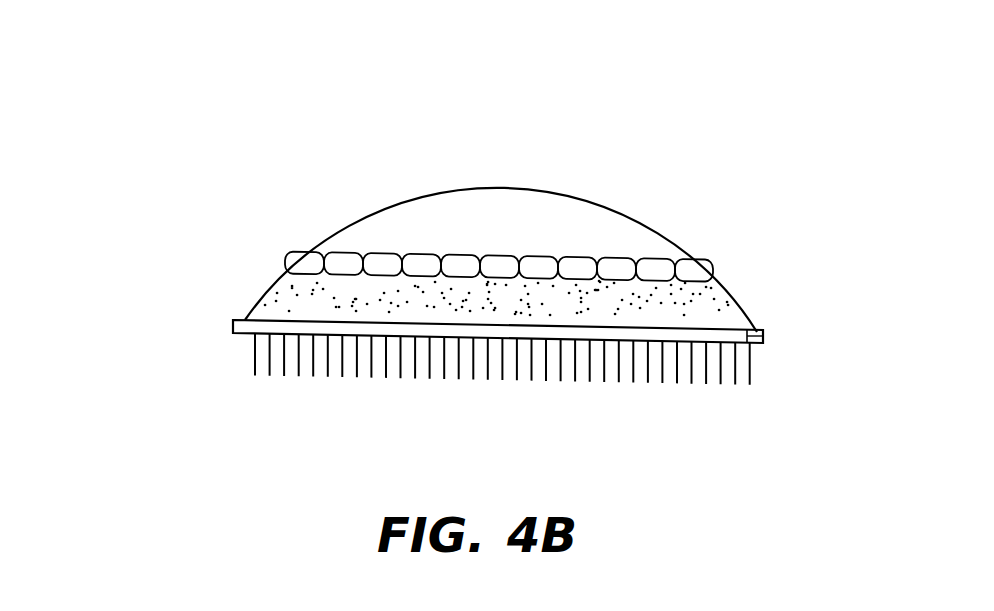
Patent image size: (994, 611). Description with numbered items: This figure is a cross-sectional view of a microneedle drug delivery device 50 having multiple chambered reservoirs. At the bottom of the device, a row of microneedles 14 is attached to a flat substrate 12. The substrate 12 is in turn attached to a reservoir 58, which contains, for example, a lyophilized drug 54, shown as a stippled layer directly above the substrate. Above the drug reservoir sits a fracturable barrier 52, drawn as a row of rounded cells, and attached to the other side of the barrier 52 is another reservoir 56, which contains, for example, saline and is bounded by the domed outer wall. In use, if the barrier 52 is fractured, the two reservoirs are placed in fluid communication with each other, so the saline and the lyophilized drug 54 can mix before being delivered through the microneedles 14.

The device 50 is at (150, 104).
The reservoir 56 is at (460, 215).
The fracturable barrier 52 is at (713, 276).
The lyophilized drug 54 is at (270, 301).
The reservoir 58 is at (387, 300).
The substrate 12 is at (765, 338).
The microneedles 14 is at (757, 368).